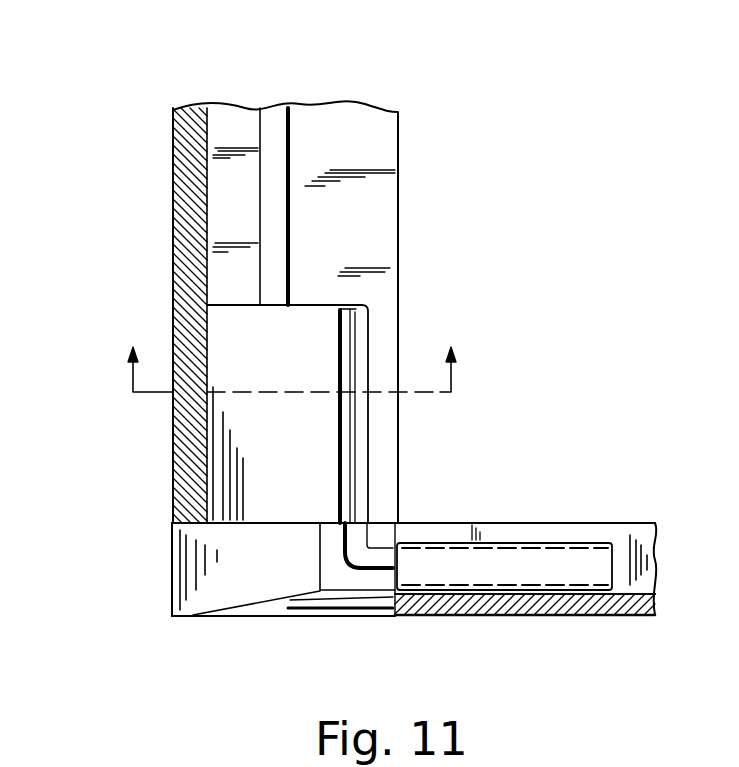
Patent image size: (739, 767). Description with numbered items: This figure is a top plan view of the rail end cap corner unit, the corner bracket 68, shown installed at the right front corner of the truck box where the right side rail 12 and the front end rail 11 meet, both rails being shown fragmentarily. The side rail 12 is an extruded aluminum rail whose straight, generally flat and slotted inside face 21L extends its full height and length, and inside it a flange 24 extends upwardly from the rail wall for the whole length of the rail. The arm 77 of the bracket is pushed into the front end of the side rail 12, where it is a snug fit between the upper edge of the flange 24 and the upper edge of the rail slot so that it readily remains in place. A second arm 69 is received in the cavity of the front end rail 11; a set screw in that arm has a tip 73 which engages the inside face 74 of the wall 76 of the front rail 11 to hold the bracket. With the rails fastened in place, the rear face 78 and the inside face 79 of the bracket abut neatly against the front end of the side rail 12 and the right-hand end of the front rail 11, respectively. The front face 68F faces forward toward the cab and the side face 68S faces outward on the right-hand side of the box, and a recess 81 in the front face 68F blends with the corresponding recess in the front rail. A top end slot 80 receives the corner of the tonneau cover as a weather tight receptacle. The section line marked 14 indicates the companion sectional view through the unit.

The front end rail 11 is at (617, 523).
The right side rail 12 is at (173, 193).
The tailgate 14 is at (287, 390).
The inside face 21L is at (398, 183).
The flange 24 is at (275, 110).
The corner bracket 68 is at (157, 658).
The side face 68S is at (175, 567).
The front face 68F is at (268, 615).
The arm 69 is at (562, 600).
The tip 73 is at (505, 588).
The inside face 74 is at (480, 588).
The wall 76 is at (522, 600).
The arm 77 is at (215, 332).
The rear face 78 is at (228, 523).
The inside face 79 is at (405, 582).
The top end slot 80 is at (367, 555).
The recess 81 is at (332, 612).